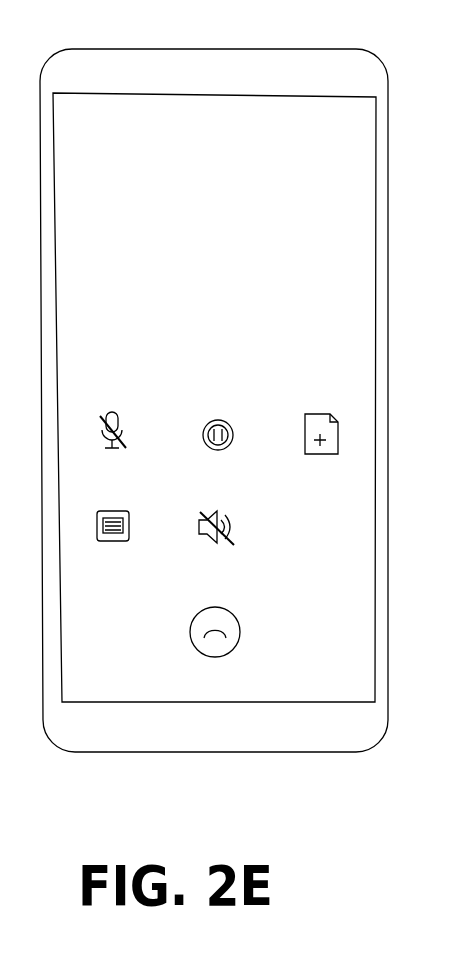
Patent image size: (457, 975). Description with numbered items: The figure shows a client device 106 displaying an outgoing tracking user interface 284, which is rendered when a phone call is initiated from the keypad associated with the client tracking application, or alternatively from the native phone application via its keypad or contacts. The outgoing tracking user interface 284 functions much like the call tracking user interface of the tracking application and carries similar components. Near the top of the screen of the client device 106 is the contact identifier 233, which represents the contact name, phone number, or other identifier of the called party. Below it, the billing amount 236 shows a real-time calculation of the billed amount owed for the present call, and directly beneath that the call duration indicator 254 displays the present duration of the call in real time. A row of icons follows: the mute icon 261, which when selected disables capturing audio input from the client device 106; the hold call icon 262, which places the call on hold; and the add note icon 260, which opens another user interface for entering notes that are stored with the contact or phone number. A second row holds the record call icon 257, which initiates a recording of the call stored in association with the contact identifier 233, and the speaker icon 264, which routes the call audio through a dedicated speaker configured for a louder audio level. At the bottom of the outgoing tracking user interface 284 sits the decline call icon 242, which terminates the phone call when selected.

The client device 106 is at (130, 57).
The outgoing tracking user interface 284 is at (312, 99).
The contact identifier 233 is at (167, 188).
The billing amount 236 is at (230, 284).
The call duration indicator 254 is at (183, 316).
The mute icon 261 is at (112, 414).
The hold call icon 262 is at (209, 418).
The add note icon 260 is at (312, 416).
The record call icon 257 is at (106, 512).
The speaker icon 264 is at (220, 515).
The decline call icon 242 is at (221, 657).